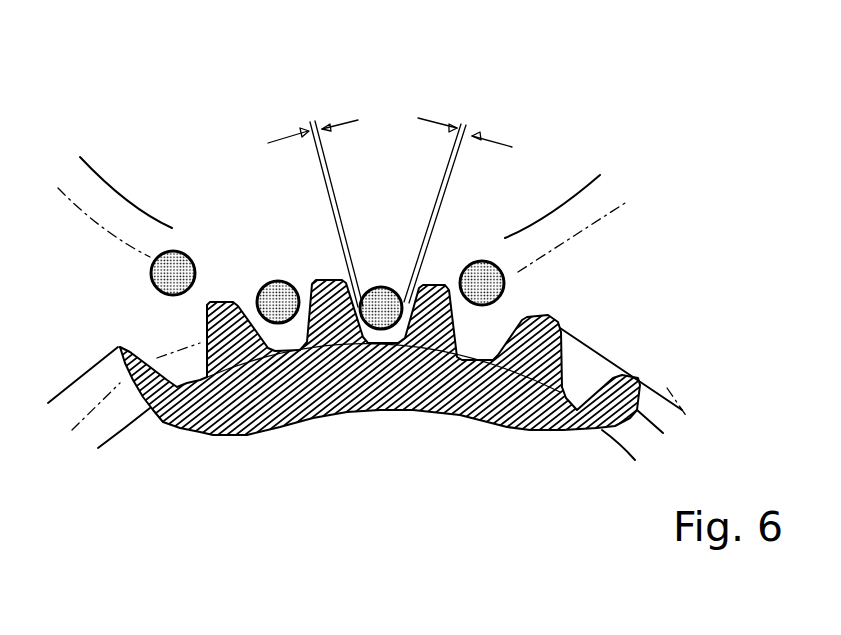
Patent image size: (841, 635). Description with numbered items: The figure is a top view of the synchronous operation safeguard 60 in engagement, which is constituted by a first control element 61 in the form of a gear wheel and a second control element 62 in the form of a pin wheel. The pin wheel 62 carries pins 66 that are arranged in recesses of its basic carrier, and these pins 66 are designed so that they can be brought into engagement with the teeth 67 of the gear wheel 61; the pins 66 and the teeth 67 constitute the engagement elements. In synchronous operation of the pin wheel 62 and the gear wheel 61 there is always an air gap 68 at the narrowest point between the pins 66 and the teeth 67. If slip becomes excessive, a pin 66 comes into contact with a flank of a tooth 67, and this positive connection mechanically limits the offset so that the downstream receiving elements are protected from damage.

The synchronous operation safeguard 60 is at (720, 301).
The first control element 61 is at (407, 507).
The second control element 62 is at (243, 182).
The pin 66 is at (505, 282).
The tooth 67 is at (565, 342).
The air gap 68 is at (318, 115).